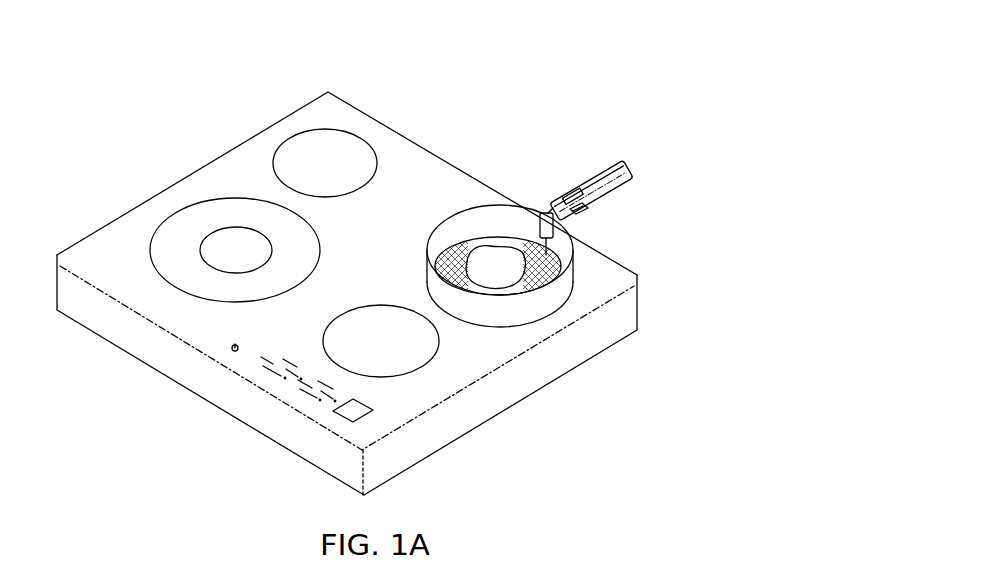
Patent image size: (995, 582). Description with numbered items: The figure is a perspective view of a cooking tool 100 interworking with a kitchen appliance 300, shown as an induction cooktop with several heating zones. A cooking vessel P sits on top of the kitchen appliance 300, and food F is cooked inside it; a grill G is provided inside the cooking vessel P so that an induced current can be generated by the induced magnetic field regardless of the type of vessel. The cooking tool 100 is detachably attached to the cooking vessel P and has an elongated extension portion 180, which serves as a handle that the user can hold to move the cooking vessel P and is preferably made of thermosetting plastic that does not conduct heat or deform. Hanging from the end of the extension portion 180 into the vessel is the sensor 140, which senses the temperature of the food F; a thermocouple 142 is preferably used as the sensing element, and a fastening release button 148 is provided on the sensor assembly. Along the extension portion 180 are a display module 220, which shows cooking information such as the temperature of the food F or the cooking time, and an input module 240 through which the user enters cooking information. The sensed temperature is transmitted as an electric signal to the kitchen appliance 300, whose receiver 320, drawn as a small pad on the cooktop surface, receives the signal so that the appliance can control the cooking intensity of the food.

The kitchen appliance 300 is at (382, 80).
The receiver 320 is at (358, 417).
The cooking tool 100 is at (605, 154).
The extension portion 180 is at (605, 180).
The display module 220 is at (580, 191).
The input module 240 is at (588, 211).
The sensor 140 is at (550, 203).
The fastening release button 148 is at (545, 211).
The thermocouple 142 is at (553, 254).
The cooking vessel P is at (429, 281).
The food F is at (495, 267).
The grill G is at (547, 287).